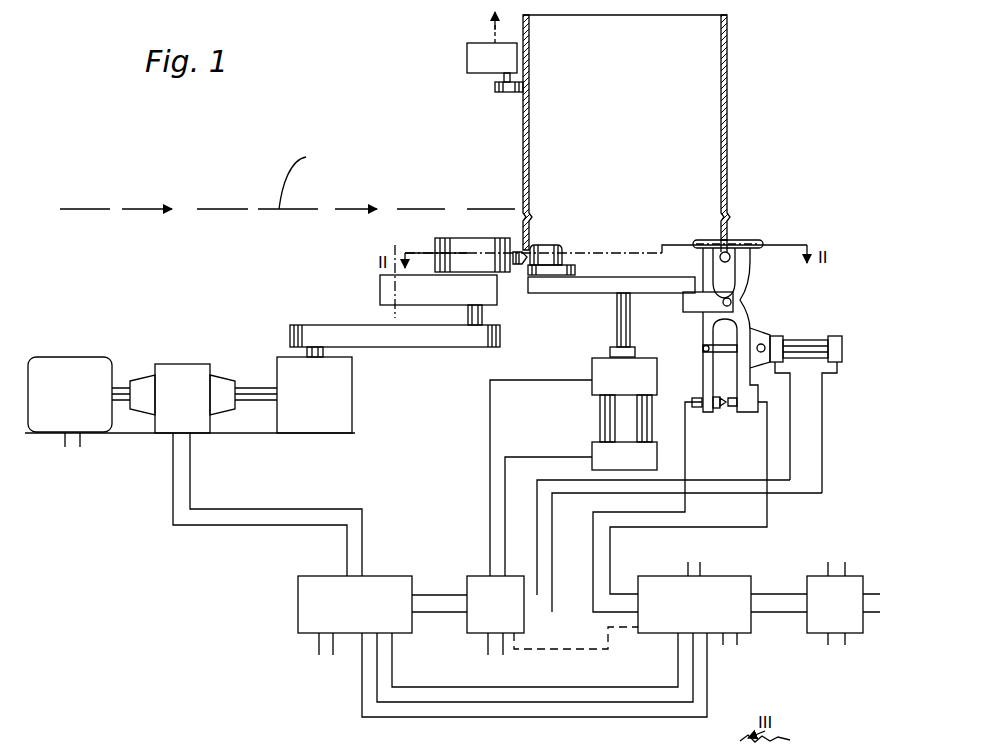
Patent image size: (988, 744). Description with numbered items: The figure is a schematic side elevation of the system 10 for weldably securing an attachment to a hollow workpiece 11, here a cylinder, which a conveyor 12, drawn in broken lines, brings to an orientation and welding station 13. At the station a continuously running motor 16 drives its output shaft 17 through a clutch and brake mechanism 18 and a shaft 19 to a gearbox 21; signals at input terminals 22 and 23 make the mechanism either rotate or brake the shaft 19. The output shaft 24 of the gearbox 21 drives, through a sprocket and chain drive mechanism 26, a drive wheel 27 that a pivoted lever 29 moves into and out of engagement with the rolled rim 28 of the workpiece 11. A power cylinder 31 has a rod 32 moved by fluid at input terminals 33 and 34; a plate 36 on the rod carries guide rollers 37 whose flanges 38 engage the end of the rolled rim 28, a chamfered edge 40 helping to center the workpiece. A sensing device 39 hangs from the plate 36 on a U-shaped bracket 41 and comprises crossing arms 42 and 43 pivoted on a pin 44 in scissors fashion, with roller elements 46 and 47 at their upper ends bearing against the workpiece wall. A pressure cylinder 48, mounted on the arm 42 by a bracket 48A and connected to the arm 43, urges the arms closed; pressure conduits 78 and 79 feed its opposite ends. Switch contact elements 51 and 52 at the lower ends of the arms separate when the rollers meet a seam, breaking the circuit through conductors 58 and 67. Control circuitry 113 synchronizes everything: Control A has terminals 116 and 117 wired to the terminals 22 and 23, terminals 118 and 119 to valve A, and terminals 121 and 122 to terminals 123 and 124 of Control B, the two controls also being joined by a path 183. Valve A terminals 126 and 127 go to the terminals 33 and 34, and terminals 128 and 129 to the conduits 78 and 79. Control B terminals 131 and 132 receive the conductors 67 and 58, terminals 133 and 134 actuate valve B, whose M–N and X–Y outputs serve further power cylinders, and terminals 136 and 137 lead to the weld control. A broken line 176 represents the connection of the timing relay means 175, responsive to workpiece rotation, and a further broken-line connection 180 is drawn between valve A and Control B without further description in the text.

The system 10 is at (331, 88).
The workpiece 11 is at (727, 95).
The conveyor 12 is at (217, 208).
The orientation and welding station 13 is at (506, 189).
The motor 16 is at (63, 362).
The output shaft 17 is at (120, 390).
The clutch and brake mechanism 18 is at (178, 370).
The shaft 19 is at (252, 390).
The gearbox 21 is at (348, 404).
The input terminal 22 is at (173, 451).
The input terminal 23 is at (192, 459).
The output shaft 24 is at (323, 352).
The sprocket and chain drive mechanism 26 is at (316, 320).
The drive wheel 27 is at (444, 250).
The rolled rim 28 is at (515, 250).
The pivoted lever 29 is at (380, 290).
The power cylinder 31 is at (598, 406).
The rod 32 is at (616, 328).
The input terminal 33 is at (563, 452).
The input terminal 34 is at (553, 400).
The plate 36 is at (552, 294).
The guide roller 37 is at (541, 248).
The flange 38 is at (527, 268).
The sensing device 39 is at (832, 284).
The chamfered edge 40 is at (557, 260).
The U-shaped bracket 41 is at (693, 300).
The arm 42 is at (704, 262).
The arm 43 is at (752, 276).
The pin 44 is at (741, 303).
The roller element 46 is at (708, 240).
The roller element 47 is at (749, 240).
The pressure cylinder 48 is at (818, 338).
The bracket 48A is at (760, 333).
The switch contact element 51 is at (729, 410).
The switch contact element 52 is at (714, 410).
The conductor 58 is at (767, 462).
The conductor 67 is at (685, 437).
The pressure conduit 78 is at (790, 469).
The pressure conduit 79 is at (823, 403).
The control circuitry 113 is at (438, 537).
The terminal 116 is at (347, 551).
The terminal 117 is at (362, 557).
The terminal 118 is at (432, 595).
The terminal 119 is at (443, 612).
The terminal 121 is at (377, 674).
The terminal 122 is at (393, 664).
The terminal 123 is at (678, 646).
The terminal 124 is at (693, 660).
The terminal 126 is at (507, 525).
The terminal 127 is at (490, 520).
The terminal 128 is at (537, 533).
The terminal 129 is at (570, 538).
The terminal 131 is at (623, 593).
The terminal 132 is at (616, 612).
The terminal 133 is at (760, 592).
The terminal 134 is at (783, 610).
The terminal 136 is at (730, 647).
The terminal 137 is at (738, 648).
The timing relay means 175 is at (470, 56).
The broken line 176 is at (492, 23).
The line 180 is at (562, 657).
The path 183 is at (362, 712).